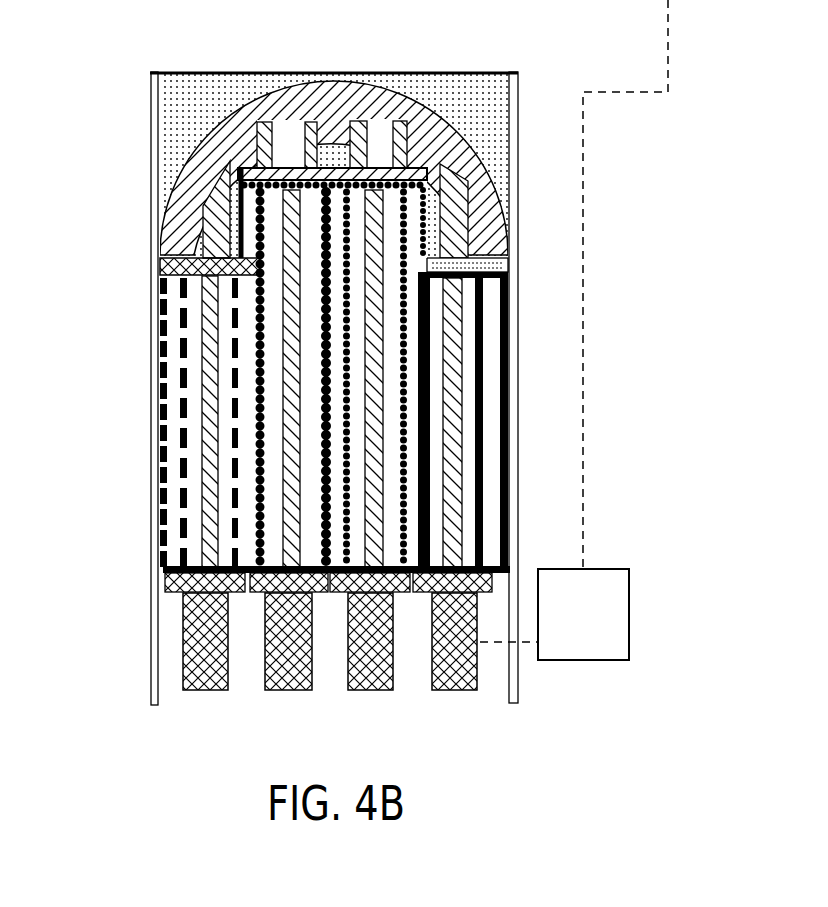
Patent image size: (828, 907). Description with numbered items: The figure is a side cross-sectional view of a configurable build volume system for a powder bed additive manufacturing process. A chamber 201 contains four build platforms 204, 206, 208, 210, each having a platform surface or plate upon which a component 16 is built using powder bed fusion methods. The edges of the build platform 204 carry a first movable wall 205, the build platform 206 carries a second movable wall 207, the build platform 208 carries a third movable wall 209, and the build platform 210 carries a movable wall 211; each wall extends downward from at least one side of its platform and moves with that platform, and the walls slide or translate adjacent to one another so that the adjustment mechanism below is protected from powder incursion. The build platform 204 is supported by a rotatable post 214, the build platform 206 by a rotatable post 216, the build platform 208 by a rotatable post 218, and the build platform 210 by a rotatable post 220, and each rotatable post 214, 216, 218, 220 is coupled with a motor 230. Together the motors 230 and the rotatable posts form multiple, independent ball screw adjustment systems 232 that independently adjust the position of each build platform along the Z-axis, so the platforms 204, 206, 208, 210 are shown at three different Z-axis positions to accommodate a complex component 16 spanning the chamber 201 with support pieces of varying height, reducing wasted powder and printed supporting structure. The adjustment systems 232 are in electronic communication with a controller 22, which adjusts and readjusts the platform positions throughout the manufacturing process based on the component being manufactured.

The component 16 is at (328, 92).
The controller 22 is at (630, 613).
The chamber 201 is at (478, 130).
The build platform 204 is at (207, 250).
The first movable wall 205 is at (173, 352).
The build platform 206 is at (288, 160).
The second movable wall 207 is at (310, 345).
The build platform 208 is at (378, 160).
The third movable wall 209 is at (400, 397).
The build platform 210 is at (465, 240).
The movable wall 211 is at (493, 462).
The rotatable post 214 is at (212, 462).
The rotatable post 216 is at (290, 525).
The rotatable post 218 is at (370, 365).
The rotatable post 220 is at (455, 423).
The motor 230 is at (248, 718).
The ball screw adjustment system 232 is at (196, 305).